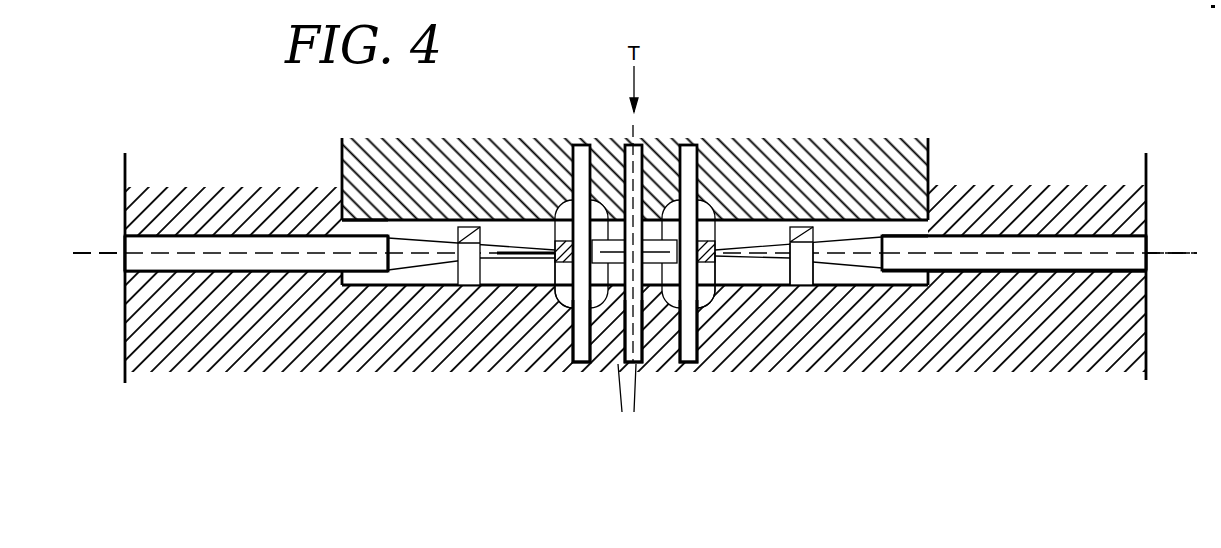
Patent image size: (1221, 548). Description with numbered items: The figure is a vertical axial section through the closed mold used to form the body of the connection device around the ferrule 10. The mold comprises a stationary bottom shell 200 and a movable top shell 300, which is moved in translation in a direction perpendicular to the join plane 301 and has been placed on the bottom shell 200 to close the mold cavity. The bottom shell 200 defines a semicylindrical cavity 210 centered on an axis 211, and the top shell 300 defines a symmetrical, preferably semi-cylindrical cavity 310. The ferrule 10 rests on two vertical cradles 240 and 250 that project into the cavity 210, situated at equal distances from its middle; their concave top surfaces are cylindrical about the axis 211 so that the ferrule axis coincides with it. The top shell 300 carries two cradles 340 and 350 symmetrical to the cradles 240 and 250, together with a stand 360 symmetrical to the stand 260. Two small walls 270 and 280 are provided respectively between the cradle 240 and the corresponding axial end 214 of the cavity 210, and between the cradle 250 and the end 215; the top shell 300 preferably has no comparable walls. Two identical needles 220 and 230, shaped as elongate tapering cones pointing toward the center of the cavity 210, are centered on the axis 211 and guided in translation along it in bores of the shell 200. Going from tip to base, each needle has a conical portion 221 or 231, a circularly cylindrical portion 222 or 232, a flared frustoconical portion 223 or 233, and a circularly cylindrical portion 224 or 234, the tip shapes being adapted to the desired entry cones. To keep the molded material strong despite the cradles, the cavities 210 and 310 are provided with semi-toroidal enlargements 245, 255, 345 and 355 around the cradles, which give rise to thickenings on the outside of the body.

The ferrule 10 is at (622, 403).
The stationary bottom shell 200 is at (255, 362).
The cavity 210 is at (865, 275).
The axis 211 is at (1157, 248).
The axial end of the cavity 214 is at (924, 227).
The axial end of the cavity 215 is at (343, 224).
The needle 220 is at (1040, 248).
The conical portion 221 is at (772, 260).
The circularly cylindrical portion 222 is at (812, 253).
The flared frustoconical portion 223 is at (872, 267).
The circularly cylindrical portion 224 is at (1125, 257).
The needle 230 is at (183, 250).
The conical portion 231 is at (495, 260).
The circularly cylindrical portion 232 is at (460, 257).
The flared frustoconical portion 233 is at (402, 263).
The circularly cylindrical portion 234 is at (133, 268).
The cradle 240 is at (690, 358).
The semi-toroidal enlargement 245 is at (705, 278).
The cradle 250 is at (580, 355).
The semi-toroidal enlargement 255 is at (562, 278).
The stand 260 is at (640, 362).
The small wall 270 is at (800, 273).
The small wall 280 is at (472, 263).
The movable top shell 300 is at (473, 148).
The join plane 301 is at (102, 255).
The cavity 310 is at (828, 227).
The cradle 340 is at (697, 147).
The semi-toroidal enlargement 345 is at (704, 230).
The cradle 350 is at (582, 146).
The semi-toroidal enlargement 355 is at (556, 231).
The stand 360 is at (640, 140).